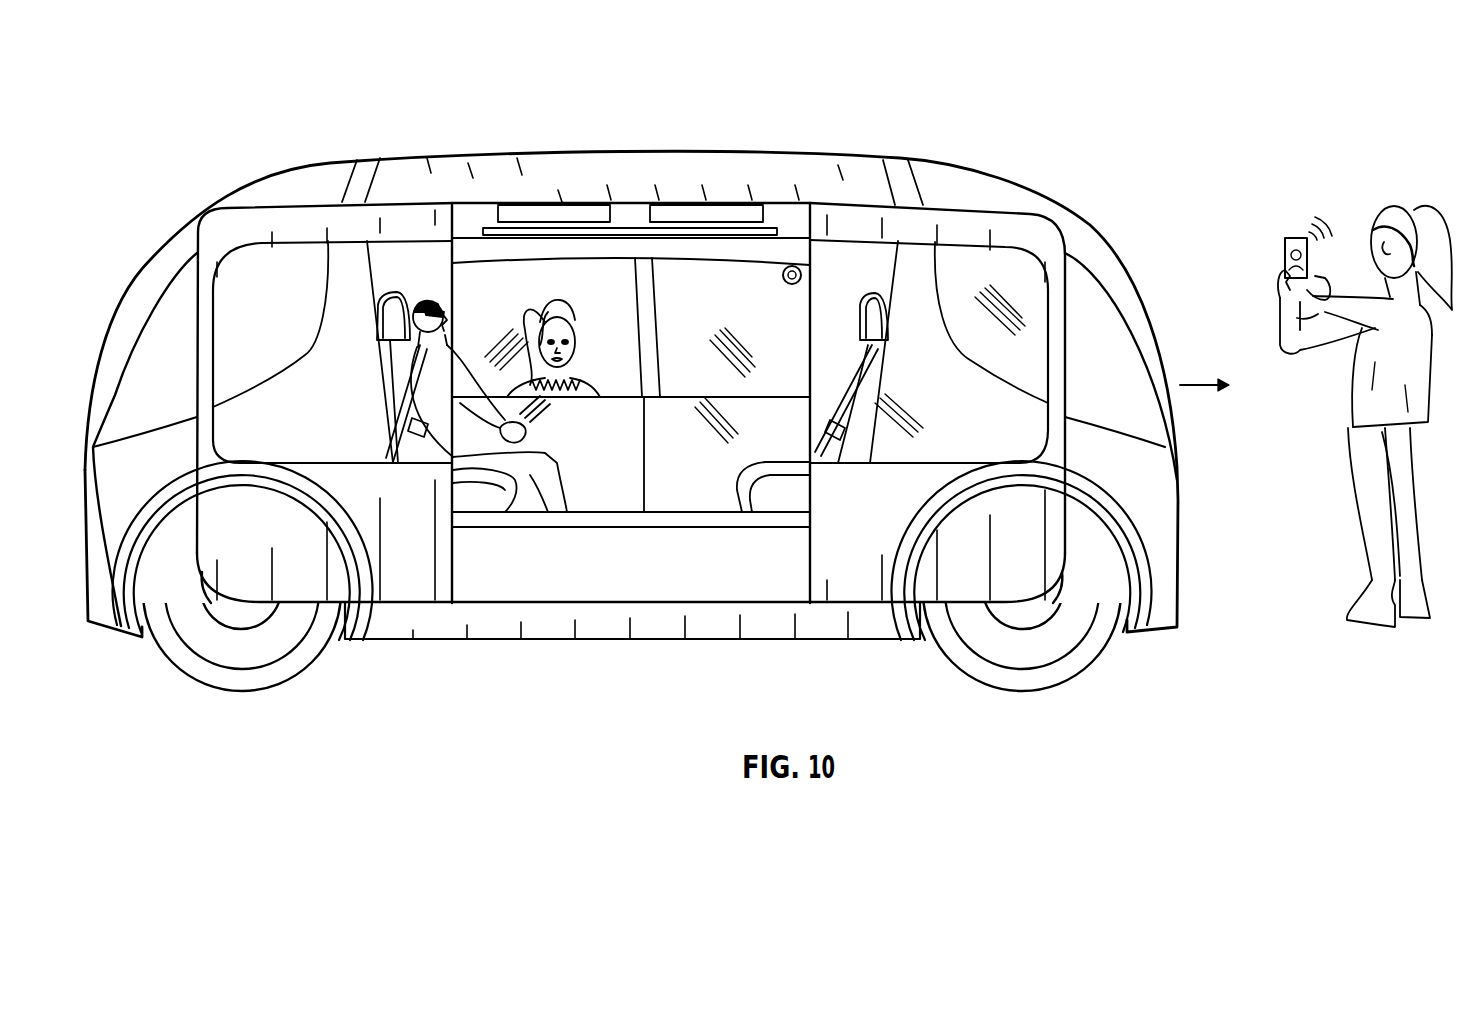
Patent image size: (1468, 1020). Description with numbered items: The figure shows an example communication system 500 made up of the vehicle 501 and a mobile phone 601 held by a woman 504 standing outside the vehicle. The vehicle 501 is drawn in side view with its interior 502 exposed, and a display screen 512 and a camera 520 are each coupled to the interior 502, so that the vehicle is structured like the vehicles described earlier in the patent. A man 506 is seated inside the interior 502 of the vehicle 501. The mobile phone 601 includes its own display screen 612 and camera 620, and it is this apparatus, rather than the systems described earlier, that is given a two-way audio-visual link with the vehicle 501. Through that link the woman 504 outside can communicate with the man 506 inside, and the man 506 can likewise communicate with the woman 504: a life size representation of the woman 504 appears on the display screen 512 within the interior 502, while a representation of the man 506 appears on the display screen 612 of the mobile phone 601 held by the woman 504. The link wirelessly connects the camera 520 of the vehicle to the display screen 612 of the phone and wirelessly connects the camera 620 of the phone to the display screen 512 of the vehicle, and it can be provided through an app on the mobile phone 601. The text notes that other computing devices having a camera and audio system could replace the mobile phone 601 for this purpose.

The communication system 500 is at (1192, 176).
The vehicle 501 is at (1049, 697).
The interior 502 is at (582, 570).
The woman 504 is at (562, 315).
The man 506 is at (420, 295).
The display screen 512 is at (497, 293).
The camera 520 is at (800, 268).
The mobile phone 601 is at (1297, 235).
The display screen 612 is at (1282, 283).
The camera 620 is at (1310, 248).